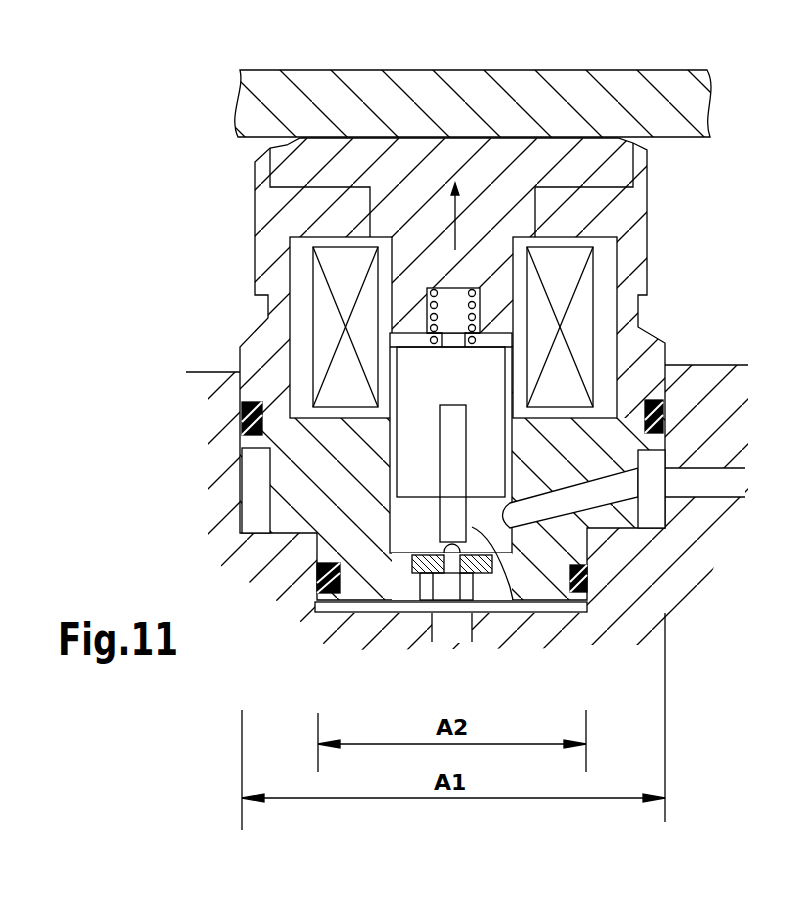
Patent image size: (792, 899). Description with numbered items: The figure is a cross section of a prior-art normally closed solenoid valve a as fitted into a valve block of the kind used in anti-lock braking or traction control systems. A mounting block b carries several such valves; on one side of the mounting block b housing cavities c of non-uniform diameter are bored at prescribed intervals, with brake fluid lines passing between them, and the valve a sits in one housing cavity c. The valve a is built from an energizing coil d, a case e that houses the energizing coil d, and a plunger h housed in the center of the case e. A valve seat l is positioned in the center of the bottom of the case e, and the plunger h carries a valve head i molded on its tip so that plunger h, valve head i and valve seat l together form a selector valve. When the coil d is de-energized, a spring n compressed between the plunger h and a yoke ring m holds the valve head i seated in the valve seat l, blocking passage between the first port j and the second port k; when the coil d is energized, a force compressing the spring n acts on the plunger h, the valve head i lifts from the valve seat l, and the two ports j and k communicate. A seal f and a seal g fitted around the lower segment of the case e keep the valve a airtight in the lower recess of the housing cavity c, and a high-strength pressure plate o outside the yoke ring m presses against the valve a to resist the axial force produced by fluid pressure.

The solenoid valve a is at (245, 205).
The mounting block b is at (195, 368).
The housing cavity c is at (664, 526).
The energizing coil d is at (592, 282).
The case e is at (648, 200).
The O-ring seal f is at (663, 418).
The seal g is at (588, 578).
The plunger h is at (517, 590).
The valve head i is at (487, 590).
The port 1 j is at (455, 600).
The port 2 k is at (630, 478).
The valve seat l is at (415, 595).
The yoke ring m is at (497, 153).
The spring n is at (437, 312).
The pressure plate o is at (645, 87).